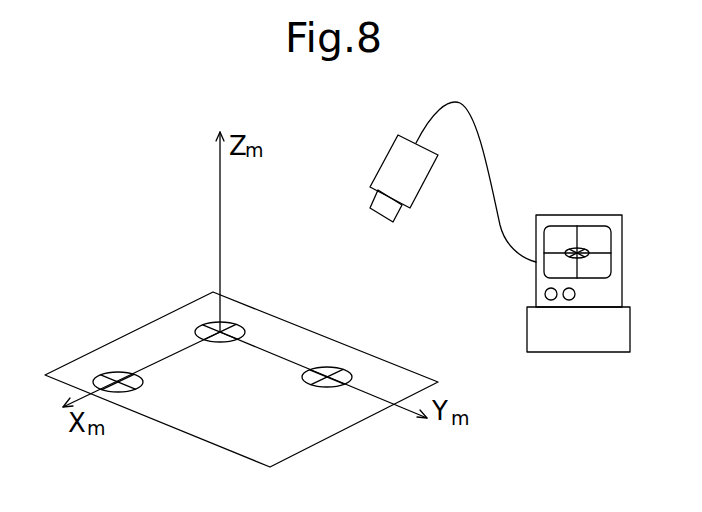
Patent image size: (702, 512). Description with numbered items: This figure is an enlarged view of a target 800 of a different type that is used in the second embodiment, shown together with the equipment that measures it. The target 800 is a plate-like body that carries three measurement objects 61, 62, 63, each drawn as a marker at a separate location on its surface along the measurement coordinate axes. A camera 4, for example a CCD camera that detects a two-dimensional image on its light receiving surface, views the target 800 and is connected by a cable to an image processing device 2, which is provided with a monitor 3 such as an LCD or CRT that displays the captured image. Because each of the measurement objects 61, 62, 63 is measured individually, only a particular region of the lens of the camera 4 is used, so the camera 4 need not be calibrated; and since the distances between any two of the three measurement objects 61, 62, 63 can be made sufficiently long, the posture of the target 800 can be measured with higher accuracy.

The target 800 is at (227, 427).
The measurement object 61 is at (222, 331).
The measurement object 62 is at (118, 380).
The measurement object 63 is at (325, 375).
The camera 4 is at (397, 167).
The monitor 3 is at (613, 222).
The image processing device 2 is at (607, 342).